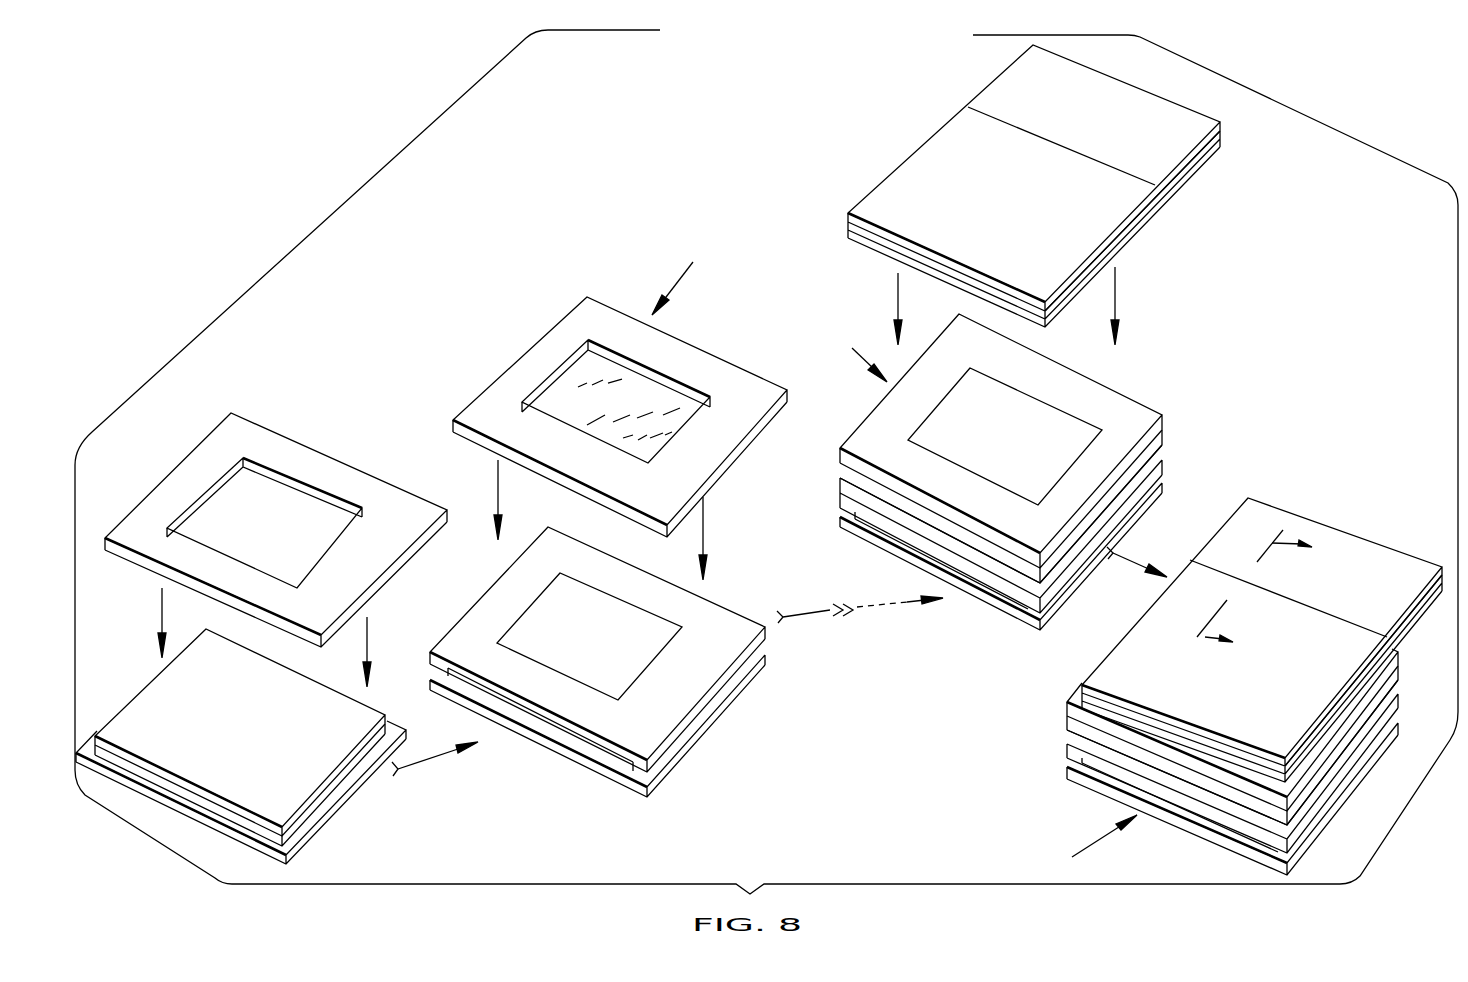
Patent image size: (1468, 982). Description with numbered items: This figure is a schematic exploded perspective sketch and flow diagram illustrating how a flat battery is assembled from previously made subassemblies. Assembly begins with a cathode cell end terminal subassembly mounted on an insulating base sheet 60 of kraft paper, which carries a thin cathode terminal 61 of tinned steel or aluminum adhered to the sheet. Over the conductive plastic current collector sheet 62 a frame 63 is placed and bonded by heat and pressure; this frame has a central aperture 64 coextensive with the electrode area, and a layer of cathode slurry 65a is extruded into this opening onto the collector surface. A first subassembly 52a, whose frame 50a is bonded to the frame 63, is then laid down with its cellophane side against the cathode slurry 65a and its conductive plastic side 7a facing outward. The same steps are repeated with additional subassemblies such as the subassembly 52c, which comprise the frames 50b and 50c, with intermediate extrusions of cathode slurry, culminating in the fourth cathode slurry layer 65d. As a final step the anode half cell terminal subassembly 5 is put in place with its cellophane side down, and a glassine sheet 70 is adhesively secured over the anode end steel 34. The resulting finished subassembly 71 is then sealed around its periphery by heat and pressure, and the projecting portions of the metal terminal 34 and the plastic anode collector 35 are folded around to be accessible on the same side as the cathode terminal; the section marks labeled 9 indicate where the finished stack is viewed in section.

The anode half cell terminal subassembly 5 is at (1210, 182).
The conductive plastic side 7a is at (616, 401).
The section line 9 is at (1261, 593).
The anode end steel 34 is at (1158, 117).
The plastic anode collector 35 is at (1218, 148).
The frame 50a is at (1082, 743).
The frame 50b is at (840, 473).
The frame 50c is at (838, 450).
The first subassembly 52a is at (688, 277).
The subassembly 52c is at (861, 345).
The insulating base sheet 60 is at (341, 788).
The cathode terminal 61 is at (239, 820).
The conductive plastic current collector sheet 62 is at (173, 779).
The frame 63 is at (202, 457).
The central aperture 64 is at (325, 503).
The cathode slurry layer 65a is at (623, 628).
The fourth cathode slurry layer 65d is at (1030, 417).
The glassine sheet 70 is at (922, 183).
The finished subassembly 71 is at (1093, 841).